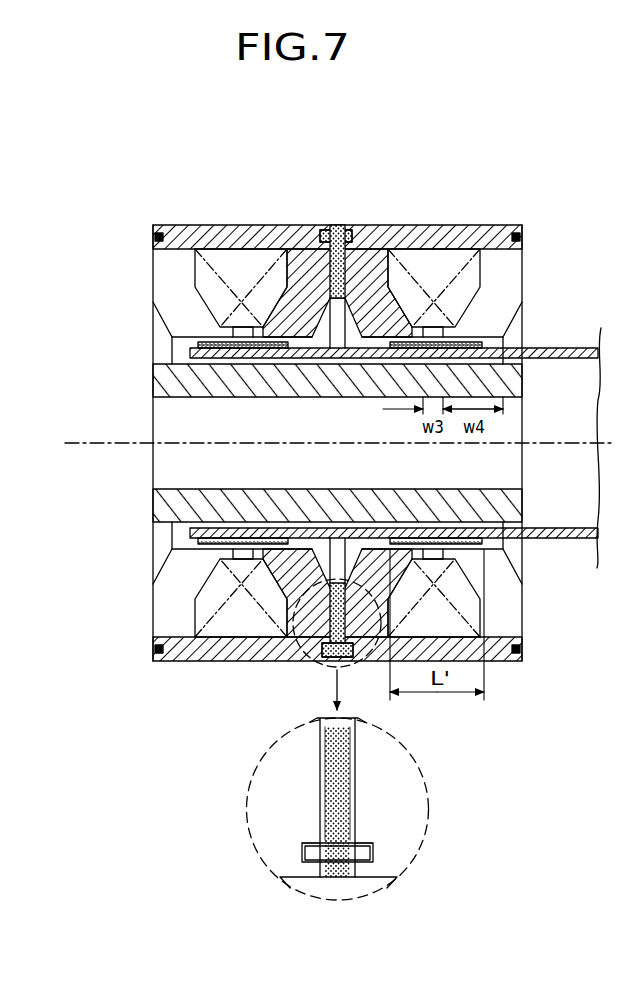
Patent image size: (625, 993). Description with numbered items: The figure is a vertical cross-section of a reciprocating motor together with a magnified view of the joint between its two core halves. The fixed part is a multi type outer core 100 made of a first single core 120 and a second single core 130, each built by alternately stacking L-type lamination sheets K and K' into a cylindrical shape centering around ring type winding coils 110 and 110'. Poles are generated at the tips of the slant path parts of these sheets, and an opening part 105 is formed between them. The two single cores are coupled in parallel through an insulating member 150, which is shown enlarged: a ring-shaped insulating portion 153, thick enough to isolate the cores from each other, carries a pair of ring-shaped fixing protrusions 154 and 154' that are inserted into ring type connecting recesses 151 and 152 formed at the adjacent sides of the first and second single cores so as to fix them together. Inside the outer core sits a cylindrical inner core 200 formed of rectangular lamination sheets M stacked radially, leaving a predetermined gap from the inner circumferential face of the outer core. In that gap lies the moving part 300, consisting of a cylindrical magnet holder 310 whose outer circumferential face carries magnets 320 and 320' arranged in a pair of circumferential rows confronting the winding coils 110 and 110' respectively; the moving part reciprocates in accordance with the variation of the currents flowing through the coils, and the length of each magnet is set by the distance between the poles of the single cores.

The multi type outer core 100 is at (378, 133).
The opening part 105 is at (437, 313).
The winding coil 110 is at (183, 443).
The winding coil 110' is at (437, 408).
The first single core 120 is at (218, 215).
The second single core 130 is at (397, 215).
The insulating member 150 is at (323, 633).
The connecting recess 151 is at (310, 867).
The connecting recess 152 is at (365, 867).
The insulating portion 153 is at (347, 767).
The fixing protrusion 154 is at (260, 809).
The fixing protrusion 154' is at (423, 810).
The inner core 200 is at (140, 505).
The moving part 300 is at (166, 343).
The magnet holder 310 is at (190, 352).
The magnet 320 is at (188, 443).
The magnet 320' is at (493, 416).
The lamination sheet K is at (337, 415).
The lamination sheet K' is at (305, 416).
The lamination sheet M is at (163, 377).